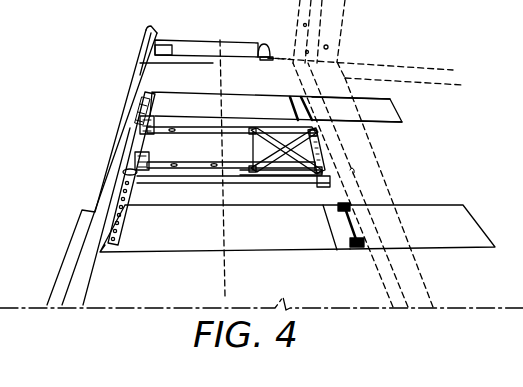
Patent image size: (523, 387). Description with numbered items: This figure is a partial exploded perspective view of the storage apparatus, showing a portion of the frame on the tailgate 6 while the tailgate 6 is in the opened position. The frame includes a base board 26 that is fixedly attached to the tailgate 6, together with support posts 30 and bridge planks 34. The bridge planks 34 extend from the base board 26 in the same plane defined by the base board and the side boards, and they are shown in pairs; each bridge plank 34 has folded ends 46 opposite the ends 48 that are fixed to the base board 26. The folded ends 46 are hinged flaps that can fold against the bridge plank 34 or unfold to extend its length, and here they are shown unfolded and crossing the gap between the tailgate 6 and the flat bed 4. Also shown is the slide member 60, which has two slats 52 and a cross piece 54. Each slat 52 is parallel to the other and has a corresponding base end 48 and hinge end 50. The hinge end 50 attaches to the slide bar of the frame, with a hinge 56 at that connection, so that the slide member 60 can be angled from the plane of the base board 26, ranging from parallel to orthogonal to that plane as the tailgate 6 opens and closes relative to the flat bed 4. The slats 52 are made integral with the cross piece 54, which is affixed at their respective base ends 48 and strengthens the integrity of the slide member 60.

The flat bed 4 is at (423, 158).
The tailgate 6 is at (271, 283).
The base board 26 is at (100, 205).
The support posts 30 is at (240, 181).
The bridge planks 34 is at (229, 102).
The folded ends 46 is at (378, 112).
The base end 48 is at (348, 168).
The hinge end 50 is at (150, 120).
The slats 52 is at (203, 133).
The cross piece 54 is at (277, 140).
The hinge 56 is at (140, 160).
The slide member 60 is at (323, 143).